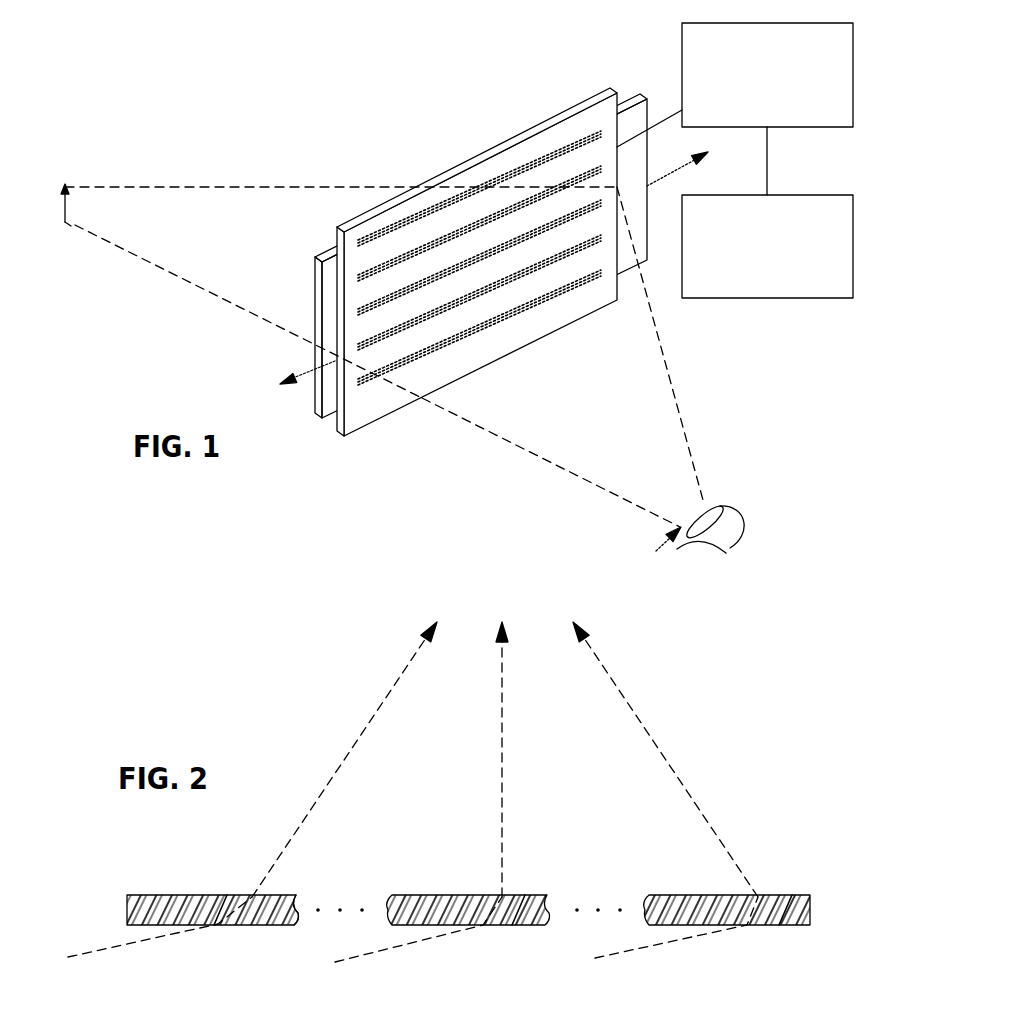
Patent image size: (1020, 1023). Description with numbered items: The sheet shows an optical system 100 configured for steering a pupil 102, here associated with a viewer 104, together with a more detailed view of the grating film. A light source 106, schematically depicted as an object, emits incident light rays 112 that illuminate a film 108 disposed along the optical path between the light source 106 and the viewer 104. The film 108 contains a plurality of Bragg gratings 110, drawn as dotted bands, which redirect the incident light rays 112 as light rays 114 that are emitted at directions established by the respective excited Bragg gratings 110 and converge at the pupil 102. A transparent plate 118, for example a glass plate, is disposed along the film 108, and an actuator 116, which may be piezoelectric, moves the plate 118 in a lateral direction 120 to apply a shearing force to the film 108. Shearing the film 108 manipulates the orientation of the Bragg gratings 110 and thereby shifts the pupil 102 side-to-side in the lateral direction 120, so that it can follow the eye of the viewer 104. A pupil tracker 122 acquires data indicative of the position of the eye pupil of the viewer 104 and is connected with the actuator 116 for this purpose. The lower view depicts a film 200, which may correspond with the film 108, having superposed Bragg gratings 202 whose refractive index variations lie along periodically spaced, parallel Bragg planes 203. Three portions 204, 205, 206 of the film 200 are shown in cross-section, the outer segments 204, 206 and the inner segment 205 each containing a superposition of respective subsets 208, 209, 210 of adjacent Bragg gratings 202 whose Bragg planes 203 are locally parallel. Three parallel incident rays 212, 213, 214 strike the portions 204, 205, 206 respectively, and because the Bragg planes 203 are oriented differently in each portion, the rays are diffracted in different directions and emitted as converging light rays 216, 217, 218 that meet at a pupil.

In FIG. 1, the optical system 100 is at (326, 96).
In FIG. 1, the pupil 102 is at (715, 494).
In FIG. 1, the viewer 104 is at (727, 518).
In FIG. 1, the light source 106 is at (64, 216).
In FIG. 1, the film 108 is at (322, 258).
In FIG. 1, the Bragg gratings 110 is at (507, 300).
In FIG. 1, the incident light rays 112 is at (260, 187).
In FIG. 1, the light rays 114 is at (665, 365).
In FIG. 1, the actuator 116 is at (853, 75).
In FIG. 1, the transparent plate 118 is at (340, 438).
In FIG. 1, the lateral direction 120 is at (674, 168).
In FIG. 1, the pupil tracker 122 is at (853, 258).
In FIG. 2, the film 200 is at (148, 880).
In FIG. 2, the Bragg gratings 202 is at (266, 916).
In FIG. 2, the Bragg planes 203 is at (296, 897).
In FIG. 2, the portion 204 is at (234, 895).
In FIG. 2, the portion 205 is at (475, 895).
In FIG. 2, the portion 206 is at (710, 895).
In FIG. 2, the subset 208 is at (220, 906).
In FIG. 2, the subset 209 is at (518, 915).
In FIG. 2, the subset 210 is at (785, 915).
In FIG. 2, the incident light ray 212 is at (150, 940).
In FIG. 2, the incident light ray 213 is at (383, 948).
In FIG. 2, the incident light ray 214 is at (647, 947).
In FIG. 2, the converging light ray 216 is at (369, 722).
In FIG. 2, the converging light ray 217 is at (503, 725).
In FIG. 2, the converging light ray 218 is at (623, 697).